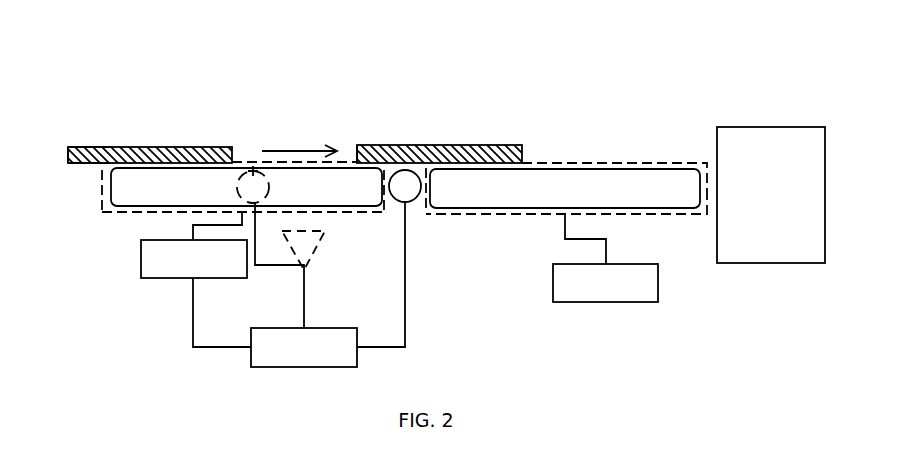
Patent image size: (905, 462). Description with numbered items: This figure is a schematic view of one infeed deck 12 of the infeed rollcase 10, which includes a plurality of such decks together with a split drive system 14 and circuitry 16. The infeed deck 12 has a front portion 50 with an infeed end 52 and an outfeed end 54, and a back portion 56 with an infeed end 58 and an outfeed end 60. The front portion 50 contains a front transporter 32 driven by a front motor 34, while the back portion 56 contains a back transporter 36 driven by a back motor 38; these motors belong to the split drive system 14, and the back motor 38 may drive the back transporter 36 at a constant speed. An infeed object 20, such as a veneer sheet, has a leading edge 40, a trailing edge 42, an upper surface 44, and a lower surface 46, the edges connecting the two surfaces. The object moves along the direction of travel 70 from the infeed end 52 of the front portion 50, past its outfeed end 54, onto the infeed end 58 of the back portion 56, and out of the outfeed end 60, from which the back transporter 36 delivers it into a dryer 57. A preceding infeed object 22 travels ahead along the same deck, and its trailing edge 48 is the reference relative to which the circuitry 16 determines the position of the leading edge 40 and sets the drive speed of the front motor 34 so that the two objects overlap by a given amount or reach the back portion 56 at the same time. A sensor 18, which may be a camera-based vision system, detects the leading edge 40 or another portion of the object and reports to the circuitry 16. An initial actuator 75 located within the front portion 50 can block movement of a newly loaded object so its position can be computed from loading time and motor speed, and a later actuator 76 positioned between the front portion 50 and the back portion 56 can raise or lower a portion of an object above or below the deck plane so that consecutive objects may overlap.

The infeed rollcase 10 is at (91, 49).
The infeed deck 12 is at (608, 130).
The split drive system 14 is at (129, 264).
The circuitry 16 is at (294, 358).
The sensor 18 is at (316, 250).
The infeed object 20 is at (163, 147).
The preceding infeed object 22 is at (440, 145).
The front transporter 32 is at (290, 198).
The front motor 34 is at (183, 269).
The back transporter 36 is at (555, 202).
The back motor 38 is at (596, 293).
The leading edge 40 is at (233, 147).
The trailing edge 42 is at (68, 154).
The upper surface 44 is at (77, 147).
The lower surface 46 is at (76, 164).
The trailing edge of the preceding infeed object 48 is at (355, 146).
The front portion 50 is at (100, 212).
The infeed end of the front portion 52 is at (100, 191).
The outfeed end of the front portion 54 is at (384, 214).
The back portion 56 is at (707, 163).
The dryer 57 is at (760, 205).
The infeed end of the back portion 58 is at (426, 214).
The outfeed end of the back portion 60 is at (707, 215).
The direction of travel 70 is at (297, 145).
The initial actuator 75 is at (253, 170).
The later actuator 76 is at (411, 201).